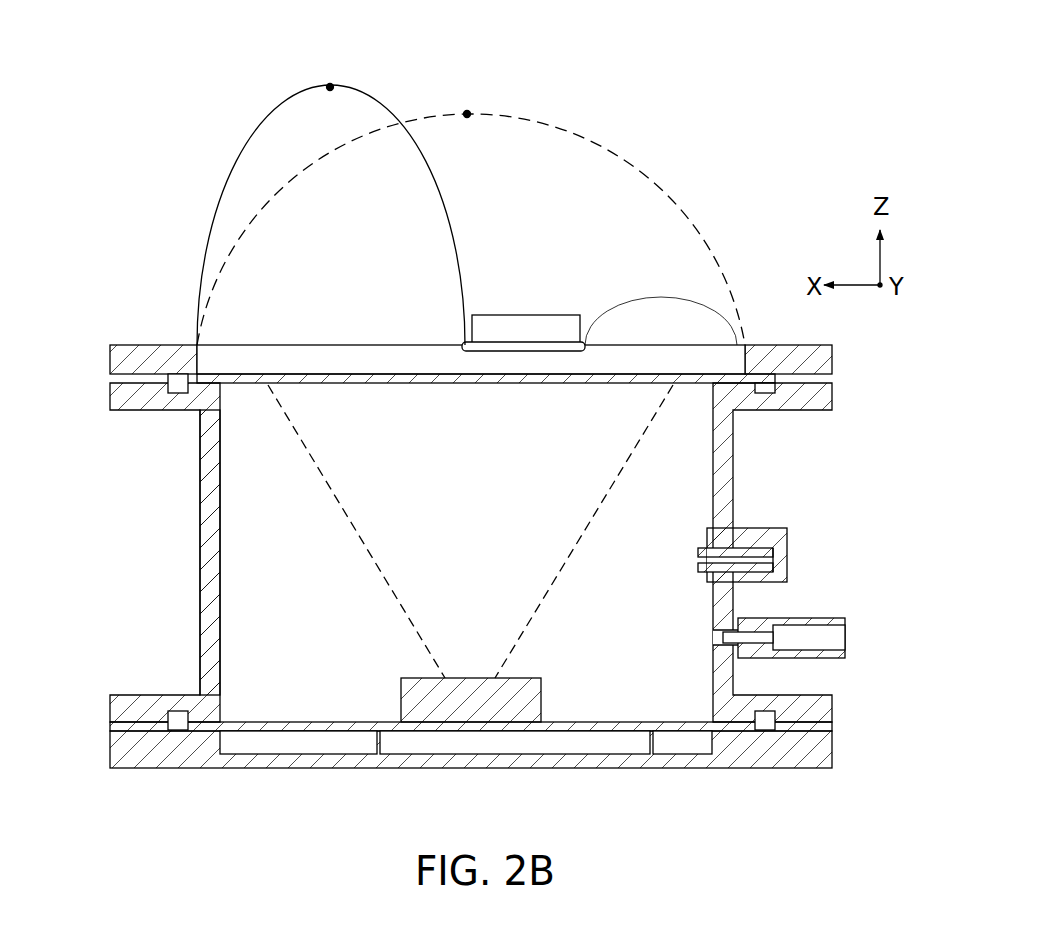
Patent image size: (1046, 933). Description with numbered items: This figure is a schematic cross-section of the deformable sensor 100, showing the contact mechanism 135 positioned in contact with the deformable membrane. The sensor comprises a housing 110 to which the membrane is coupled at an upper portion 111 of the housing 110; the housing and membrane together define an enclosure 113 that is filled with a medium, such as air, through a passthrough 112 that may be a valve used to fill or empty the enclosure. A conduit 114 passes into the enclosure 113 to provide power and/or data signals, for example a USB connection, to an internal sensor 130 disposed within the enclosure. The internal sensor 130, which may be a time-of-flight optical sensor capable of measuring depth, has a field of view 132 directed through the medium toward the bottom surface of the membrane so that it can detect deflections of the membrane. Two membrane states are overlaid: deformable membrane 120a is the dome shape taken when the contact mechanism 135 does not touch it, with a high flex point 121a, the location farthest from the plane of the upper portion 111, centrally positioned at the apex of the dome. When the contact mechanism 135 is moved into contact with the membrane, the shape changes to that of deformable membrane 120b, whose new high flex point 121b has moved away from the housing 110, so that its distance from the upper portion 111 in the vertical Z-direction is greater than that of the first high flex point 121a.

The deformable sensor 100 is at (147, 122).
The housing 110 is at (106, 356).
The upper portion of the housing 111 is at (143, 345).
The passthrough 112 is at (776, 522).
The enclosure 113 is at (230, 545).
The conduit 114 is at (833, 608).
The deformable membrane (uncontacted state) 120a is at (684, 212).
The deformable membrane (contacted state) 120b is at (458, 229).
The high flex point (first location) 121a is at (471, 111).
The high flex point (second location) 121b is at (335, 84).
The internal sensor 130 is at (542, 703).
The field of view 132 is at (373, 540).
The contact mechanism 135 is at (555, 315).